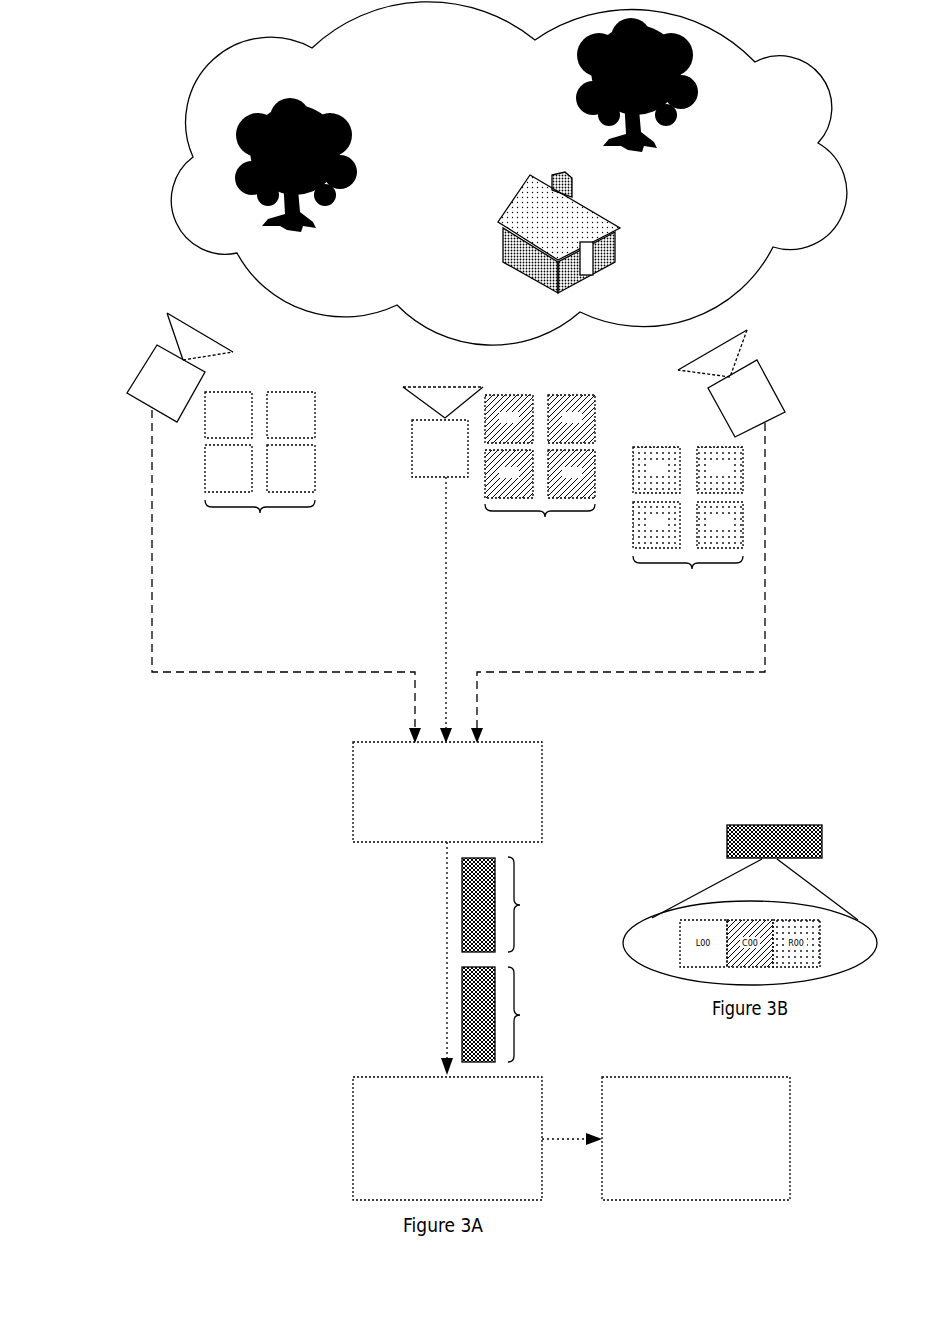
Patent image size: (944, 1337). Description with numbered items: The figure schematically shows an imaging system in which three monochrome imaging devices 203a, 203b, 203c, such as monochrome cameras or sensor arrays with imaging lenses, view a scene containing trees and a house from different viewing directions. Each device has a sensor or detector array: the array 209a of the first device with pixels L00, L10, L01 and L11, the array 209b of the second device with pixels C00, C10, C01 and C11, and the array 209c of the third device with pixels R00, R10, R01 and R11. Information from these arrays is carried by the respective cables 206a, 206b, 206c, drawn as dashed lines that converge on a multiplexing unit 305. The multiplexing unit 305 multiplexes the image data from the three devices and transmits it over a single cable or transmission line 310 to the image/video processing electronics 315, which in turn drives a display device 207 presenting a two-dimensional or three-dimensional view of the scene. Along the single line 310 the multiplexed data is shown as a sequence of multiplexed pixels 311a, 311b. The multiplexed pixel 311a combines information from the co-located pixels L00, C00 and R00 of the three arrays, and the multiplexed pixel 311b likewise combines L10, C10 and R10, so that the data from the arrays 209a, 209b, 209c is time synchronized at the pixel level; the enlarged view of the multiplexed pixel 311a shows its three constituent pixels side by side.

In FIG. 3A, the monochrome imaging device 203a is at (140, 367).
In FIG. 3A, the monochrome imaging device 203b is at (412, 455).
In FIG. 3A, the monochrome imaging device 203c is at (772, 385).
In FIG. 3A, the cable 206a is at (152, 538).
In FIG. 3A, the cable 206b is at (447, 588).
In FIG. 3A, the cable 206c is at (767, 555).
In FIG. 3A, the sensor array 209a is at (260, 466).
In FIG. 3A, the sensor array 209b is at (540, 470).
In FIG. 3A, the sensor array 209c is at (688, 522).
In FIG. 3A, the multiplexing unit 305 is at (542, 792).
In FIG. 3A, the single cable/transmission line 310 is at (447, 952).
In FIG. 3A, the multiplexed pixel 311a is at (519, 1014).
In FIG. 3B, the multiplexed pixel 311a is at (773, 825).
In FIG. 3A, the multiplexed pixel 311b is at (519, 904).
In FIG. 3A, the image/video processing electronics 315 is at (353, 1135).
In FIG. 3A, the display device 207 is at (790, 1133).